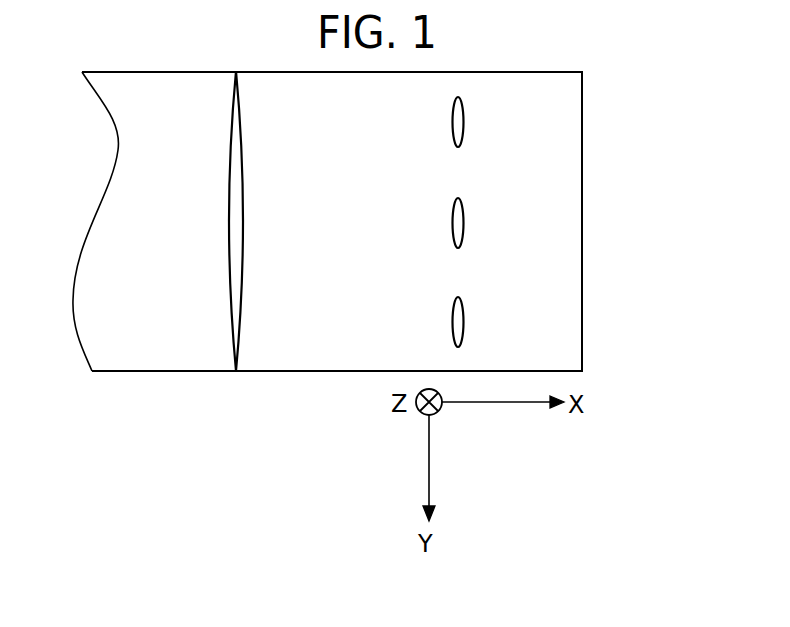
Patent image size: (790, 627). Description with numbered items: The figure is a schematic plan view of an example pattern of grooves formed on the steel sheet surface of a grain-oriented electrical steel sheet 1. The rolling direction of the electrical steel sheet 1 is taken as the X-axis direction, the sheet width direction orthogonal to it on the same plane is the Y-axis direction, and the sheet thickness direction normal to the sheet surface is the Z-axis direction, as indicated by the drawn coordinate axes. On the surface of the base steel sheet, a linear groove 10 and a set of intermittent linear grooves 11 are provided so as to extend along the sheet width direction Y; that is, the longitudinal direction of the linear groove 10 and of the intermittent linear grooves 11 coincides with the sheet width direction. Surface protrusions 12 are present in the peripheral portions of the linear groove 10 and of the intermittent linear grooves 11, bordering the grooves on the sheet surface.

The electrical steel sheet 1 is at (582, 222).
The linear groove 10 is at (242, 235).
The intermittent linear grooves 11 is at (462, 130).
The surface protrusions 12 is at (242, 115).